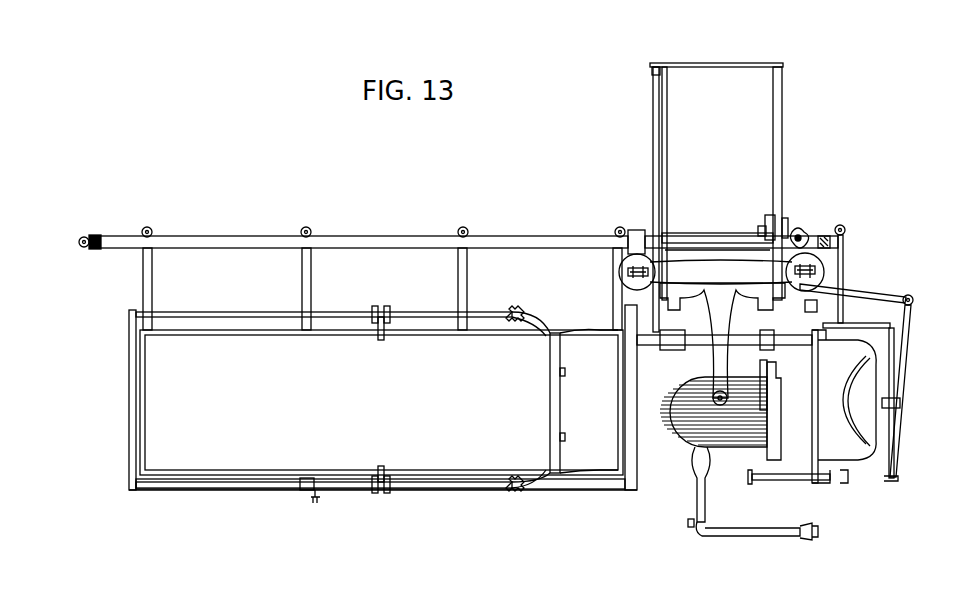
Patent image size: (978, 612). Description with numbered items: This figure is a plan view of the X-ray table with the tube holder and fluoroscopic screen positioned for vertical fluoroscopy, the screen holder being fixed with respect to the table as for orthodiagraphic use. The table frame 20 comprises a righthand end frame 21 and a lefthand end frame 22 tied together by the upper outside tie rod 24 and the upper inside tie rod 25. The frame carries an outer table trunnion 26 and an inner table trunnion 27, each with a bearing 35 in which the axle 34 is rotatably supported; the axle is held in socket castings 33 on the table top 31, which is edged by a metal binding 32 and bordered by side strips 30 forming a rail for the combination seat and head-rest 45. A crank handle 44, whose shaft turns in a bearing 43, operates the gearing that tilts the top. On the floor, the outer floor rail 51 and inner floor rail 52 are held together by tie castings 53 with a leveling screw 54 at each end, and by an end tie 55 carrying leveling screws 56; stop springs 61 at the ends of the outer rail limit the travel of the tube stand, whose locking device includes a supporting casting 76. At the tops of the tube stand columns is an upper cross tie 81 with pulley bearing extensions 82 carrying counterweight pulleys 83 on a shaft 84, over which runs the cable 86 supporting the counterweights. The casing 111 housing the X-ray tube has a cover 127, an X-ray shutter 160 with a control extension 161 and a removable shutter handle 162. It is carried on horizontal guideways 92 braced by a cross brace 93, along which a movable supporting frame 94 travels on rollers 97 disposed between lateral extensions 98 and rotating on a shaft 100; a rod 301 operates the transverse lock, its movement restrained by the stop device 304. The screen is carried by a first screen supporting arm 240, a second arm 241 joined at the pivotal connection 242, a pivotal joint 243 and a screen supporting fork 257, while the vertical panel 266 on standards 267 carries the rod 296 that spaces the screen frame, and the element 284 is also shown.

The table frame 20 is at (130, 486).
The righthand end frame 21 is at (637, 466).
The lefthand end frame 22 is at (128, 420).
The upper outside tie rod 24 is at (172, 489).
The upper inside tie rod 25 is at (142, 312).
The outer table trunnion 26 is at (432, 490).
The inner table trunnion 27 is at (400, 312).
The side strips 30 is at (588, 330).
The table top 31 is at (152, 443).
The metal binding 32 is at (180, 335).
The socket castings 33 is at (378, 340).
The axle 34 is at (388, 306).
The bearing 35 is at (372, 314).
The bearing 43 is at (306, 491).
The crank handle 44 is at (318, 504).
The combination seat and head-rest 45 is at (550, 385).
The outer floor rail 51 is at (165, 236).
The inner floor rail 52 is at (654, 335).
The tie castings 53 is at (152, 262).
The leveling screw 54 is at (145, 227).
The end tie 55 is at (843, 268).
The leveling screws 56 is at (843, 228).
The stop springs 61 is at (100, 238).
The supporting casting 76 is at (800, 230).
The upper cross tie 81 is at (748, 290).
The pulley bearing extensions 82 is at (636, 230).
The counterweight pulleys 83 is at (620, 268).
The shaft 84 is at (642, 280).
The cable 86 is at (721, 271).
The guideways 92 is at (667, 95).
The cross brace 93 is at (686, 63).
The movable supporting frame 94 is at (697, 233).
The rollers 97 is at (768, 215).
The lateral extensions 98 is at (784, 218).
The shaft 100 is at (760, 226).
The casing 111 is at (680, 440).
The cover 127 is at (768, 372).
The X-ray shutter 160 is at (781, 425).
The control extension 161 is at (716, 468).
The auxiliary shutter handle 162 is at (766, 537).
The first screen supporting arm 240 is at (888, 294).
The second screen supporting arm 241 is at (905, 340).
The pivotal connection 242 is at (912, 298).
The pivotal joint 243 is at (898, 408).
The screen supporting fork 257 is at (897, 442).
The vertical panel 266 is at (856, 460).
The standards 267 is at (782, 481).
The bracket 284 is at (783, 332).
The rod 296 is at (862, 323).
The rod 301 is at (653, 140).
The stop device 304 is at (650, 72).